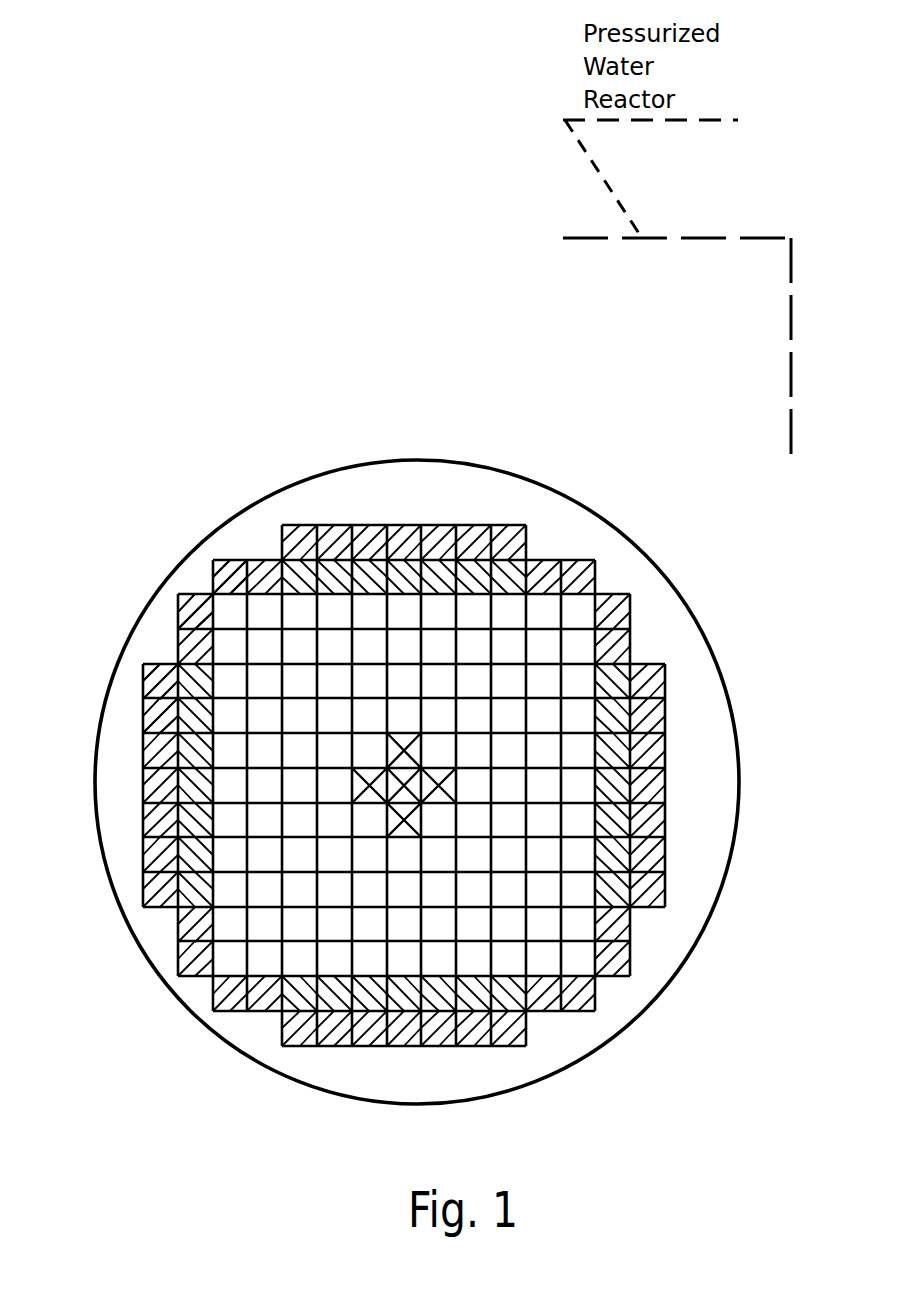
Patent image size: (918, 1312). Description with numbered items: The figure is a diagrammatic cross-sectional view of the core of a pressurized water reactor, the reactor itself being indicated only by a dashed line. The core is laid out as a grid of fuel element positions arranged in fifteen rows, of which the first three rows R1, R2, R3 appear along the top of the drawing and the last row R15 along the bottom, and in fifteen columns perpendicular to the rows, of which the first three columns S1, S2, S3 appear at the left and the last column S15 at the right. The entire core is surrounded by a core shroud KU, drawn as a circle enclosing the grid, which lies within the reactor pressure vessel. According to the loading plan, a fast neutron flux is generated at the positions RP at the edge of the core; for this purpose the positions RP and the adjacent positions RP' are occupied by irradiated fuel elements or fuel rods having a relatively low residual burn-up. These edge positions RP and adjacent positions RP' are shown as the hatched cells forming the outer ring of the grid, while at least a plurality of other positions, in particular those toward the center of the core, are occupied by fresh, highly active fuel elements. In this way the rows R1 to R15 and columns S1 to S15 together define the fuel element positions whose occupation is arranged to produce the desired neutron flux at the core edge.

The core shroud KU is at (413, 460).
The positions at the edge of the core RP is at (177, 577).
The adjacent positions RP' is at (101, 698).
The row R1 is at (523, 542).
The row R2 is at (594, 576).
The row R3 is at (629, 604).
The row R15 is at (530, 1027).
The column S1 is at (160, 907).
The column S2 is at (200, 976).
The column S3 is at (238, 1011).
The column S15 is at (648, 907).